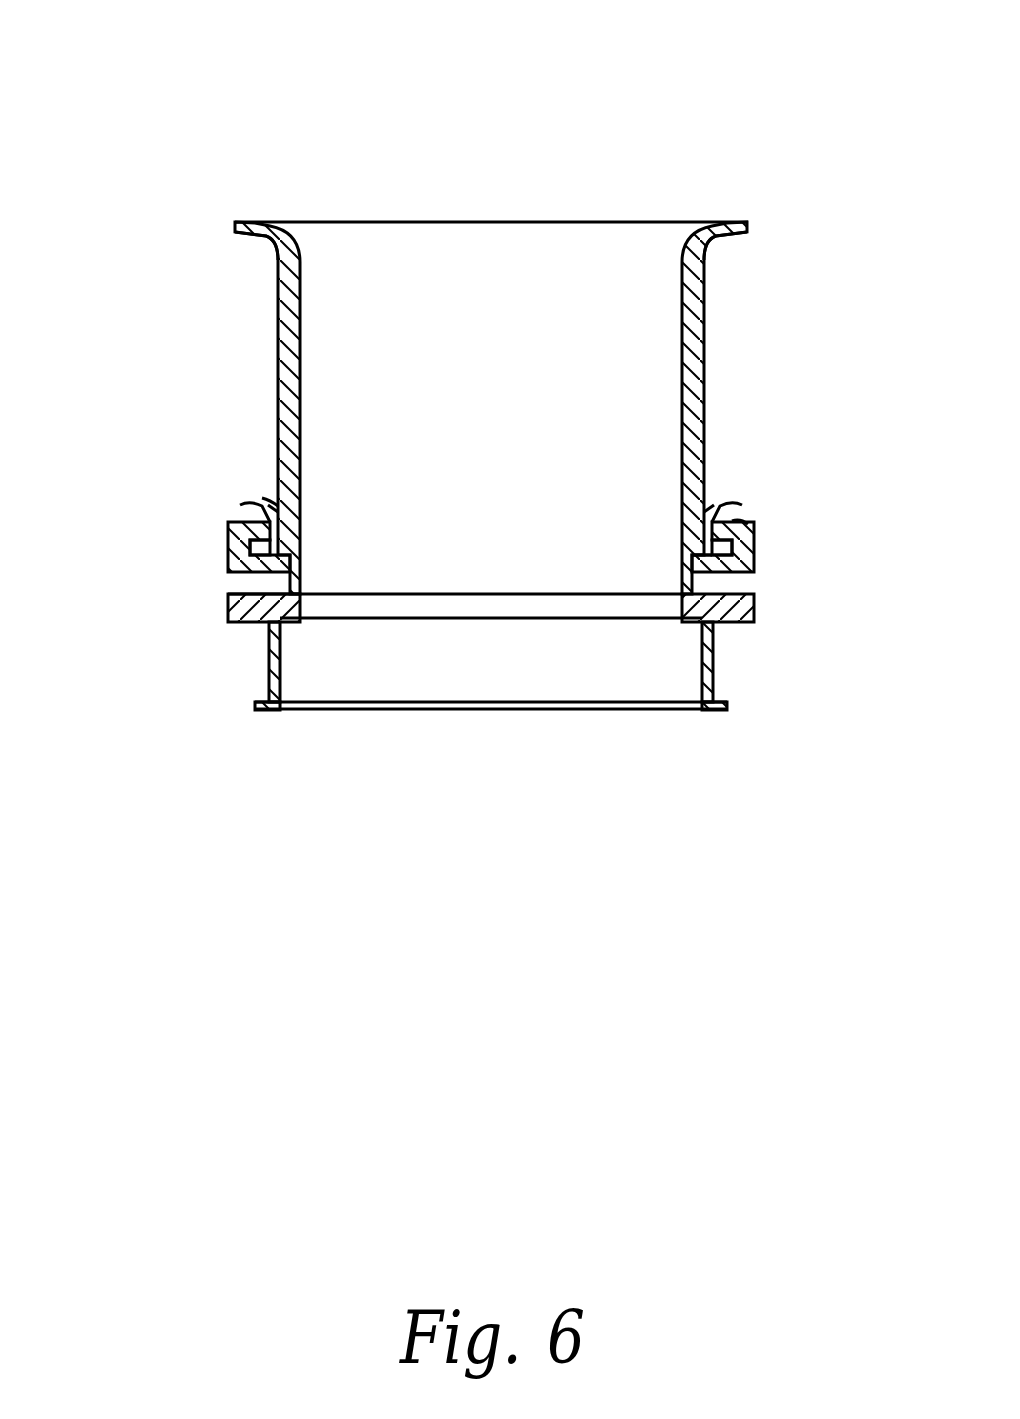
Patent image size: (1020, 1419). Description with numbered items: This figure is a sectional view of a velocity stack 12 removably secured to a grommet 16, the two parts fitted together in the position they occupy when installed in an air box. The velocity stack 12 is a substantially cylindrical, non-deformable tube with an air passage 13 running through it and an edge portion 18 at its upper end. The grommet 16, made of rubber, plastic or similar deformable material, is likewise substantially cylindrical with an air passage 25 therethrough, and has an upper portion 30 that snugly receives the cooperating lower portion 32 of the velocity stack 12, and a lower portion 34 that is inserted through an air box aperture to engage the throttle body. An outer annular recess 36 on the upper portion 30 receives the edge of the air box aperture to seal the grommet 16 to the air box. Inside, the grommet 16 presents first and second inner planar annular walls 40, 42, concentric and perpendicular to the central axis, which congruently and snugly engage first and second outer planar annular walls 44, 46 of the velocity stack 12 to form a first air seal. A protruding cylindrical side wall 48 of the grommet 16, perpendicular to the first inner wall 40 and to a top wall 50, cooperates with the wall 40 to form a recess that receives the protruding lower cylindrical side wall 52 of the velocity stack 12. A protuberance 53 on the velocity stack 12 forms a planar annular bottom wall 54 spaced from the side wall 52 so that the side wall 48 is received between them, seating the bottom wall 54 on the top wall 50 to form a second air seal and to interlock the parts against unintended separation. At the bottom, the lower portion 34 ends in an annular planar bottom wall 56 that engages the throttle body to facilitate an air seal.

The velocity stack 12 is at (706, 318).
The air passage 13 is at (466, 245).
The grommet 16 is at (716, 665).
The edge portion 18 is at (256, 221).
The air passage 25 is at (552, 670).
The upper portion 30 is at (228, 550).
The lower portion 32 is at (270, 505).
The lower portion 34 is at (265, 673).
The outer annular recess 36 is at (754, 582).
The first inner planar annular wall 40 is at (240, 600).
The second inner planar annular wall 42 is at (316, 600).
The first outer planar annular wall 44 is at (300, 540).
The second outer planar annular wall 46 is at (400, 592).
The protruding cylindrical side wall 48 is at (700, 556).
The top wall 50 is at (748, 524).
The protruding lower cylindrical side wall 52 is at (754, 542).
The protuberance 53 is at (240, 505).
The bottom wall 54 is at (262, 498).
The bottom wall 56 is at (726, 708).